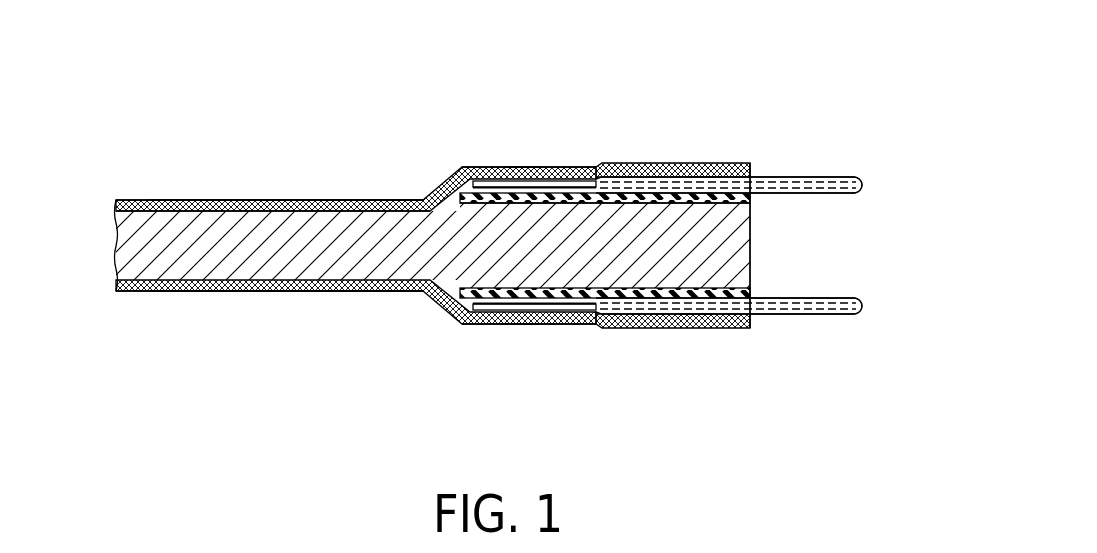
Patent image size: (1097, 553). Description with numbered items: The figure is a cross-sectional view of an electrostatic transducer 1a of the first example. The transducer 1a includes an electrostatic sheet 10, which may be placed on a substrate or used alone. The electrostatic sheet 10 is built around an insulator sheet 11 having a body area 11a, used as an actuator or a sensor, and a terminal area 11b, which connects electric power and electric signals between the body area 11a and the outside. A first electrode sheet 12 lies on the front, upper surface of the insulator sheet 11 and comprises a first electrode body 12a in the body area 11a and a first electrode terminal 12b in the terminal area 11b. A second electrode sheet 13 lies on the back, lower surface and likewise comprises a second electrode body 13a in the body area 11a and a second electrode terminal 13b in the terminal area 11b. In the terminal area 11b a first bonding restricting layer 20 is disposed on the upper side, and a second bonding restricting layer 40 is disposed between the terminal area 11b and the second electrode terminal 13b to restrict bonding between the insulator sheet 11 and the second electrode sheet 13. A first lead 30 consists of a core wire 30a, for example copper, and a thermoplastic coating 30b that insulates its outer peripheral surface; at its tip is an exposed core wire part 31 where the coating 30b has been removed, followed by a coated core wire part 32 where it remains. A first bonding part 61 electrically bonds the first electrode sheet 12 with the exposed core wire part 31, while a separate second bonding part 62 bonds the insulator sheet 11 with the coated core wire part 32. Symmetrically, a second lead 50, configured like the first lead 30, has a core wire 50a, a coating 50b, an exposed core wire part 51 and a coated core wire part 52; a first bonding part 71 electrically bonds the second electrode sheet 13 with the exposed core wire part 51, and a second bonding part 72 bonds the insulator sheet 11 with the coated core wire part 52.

The transducer 1a is at (869, 131).
The electrostatic sheet 10 is at (137, 196).
The insulator sheet 11 is at (271, 243).
The body area 11a is at (315, 245).
The terminal area 11b is at (502, 258).
The first electrode sheet 12 is at (165, 200).
The first electrode body 12a is at (205, 209).
The first electrode terminal 12b is at (503, 168).
The second electrode sheet 13 is at (163, 293).
The second electrode body 13a is at (216, 293).
The second electrode terminal 13b is at (500, 327).
The first bonding restricting layer 20 is at (698, 204).
The first lead 30 is at (729, 111).
The core wire 30a is at (770, 177).
The coating 30b is at (845, 177).
The exposed core wire part 31 is at (557, 180).
The coated core wire part 32 is at (669, 180).
The second bonding restricting layer 40 is at (703, 288).
The second lead 50 is at (731, 383).
The core wire 50a is at (775, 313).
The coating 50b is at (850, 313).
The exposed core wire part 51 is at (558, 312).
The coated core wire part 52 is at (665, 327).
The first bonding part 61 is at (524, 164).
The second bonding part 62 is at (699, 192).
The first bonding part 71 is at (527, 327).
The second bonding part 72 is at (691, 308).